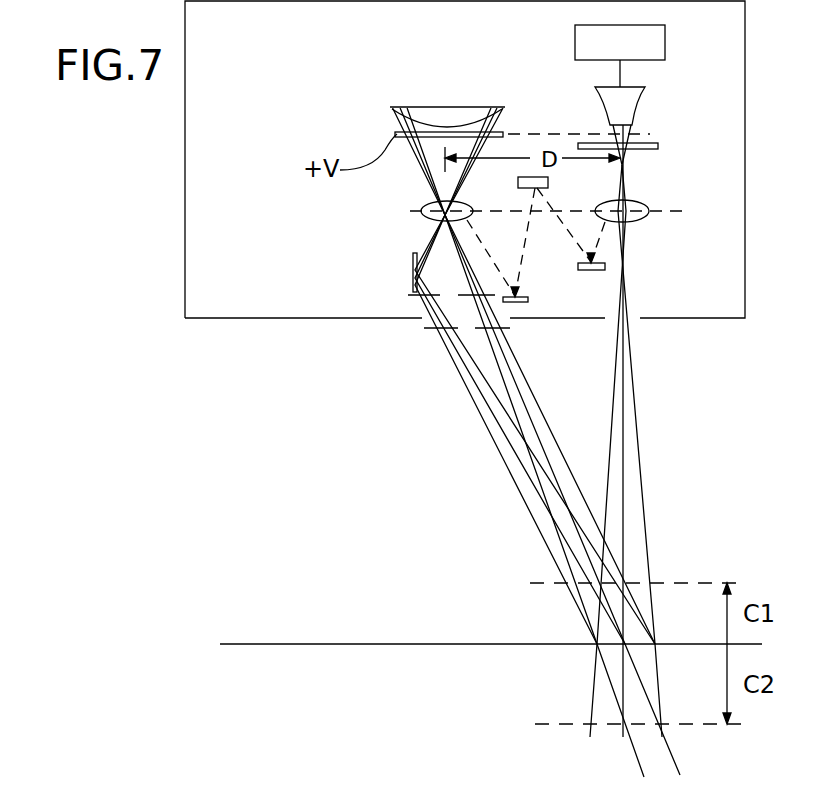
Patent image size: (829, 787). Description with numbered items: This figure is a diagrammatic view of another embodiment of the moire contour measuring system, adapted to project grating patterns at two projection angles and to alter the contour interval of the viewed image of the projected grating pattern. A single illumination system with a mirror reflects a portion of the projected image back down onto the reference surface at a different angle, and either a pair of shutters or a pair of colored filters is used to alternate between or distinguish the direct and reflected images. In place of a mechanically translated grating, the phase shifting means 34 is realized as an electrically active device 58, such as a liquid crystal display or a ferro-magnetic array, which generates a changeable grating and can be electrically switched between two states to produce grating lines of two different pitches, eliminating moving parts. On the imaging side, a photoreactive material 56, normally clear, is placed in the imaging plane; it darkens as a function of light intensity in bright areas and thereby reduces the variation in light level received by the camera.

The phase shifting means 34 is at (376, 131).
The electrically active device 58 is at (503, 133).
The photoreactive material 56 is at (660, 145).